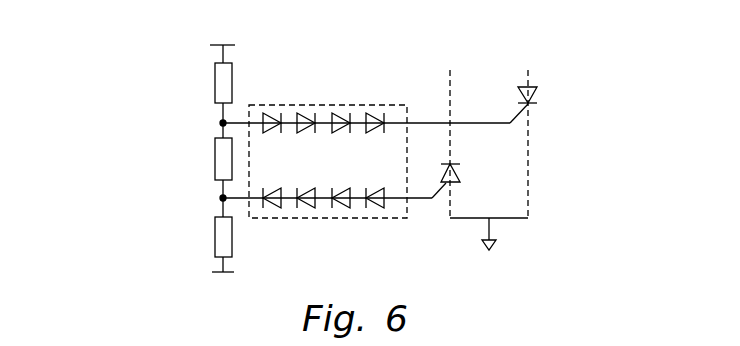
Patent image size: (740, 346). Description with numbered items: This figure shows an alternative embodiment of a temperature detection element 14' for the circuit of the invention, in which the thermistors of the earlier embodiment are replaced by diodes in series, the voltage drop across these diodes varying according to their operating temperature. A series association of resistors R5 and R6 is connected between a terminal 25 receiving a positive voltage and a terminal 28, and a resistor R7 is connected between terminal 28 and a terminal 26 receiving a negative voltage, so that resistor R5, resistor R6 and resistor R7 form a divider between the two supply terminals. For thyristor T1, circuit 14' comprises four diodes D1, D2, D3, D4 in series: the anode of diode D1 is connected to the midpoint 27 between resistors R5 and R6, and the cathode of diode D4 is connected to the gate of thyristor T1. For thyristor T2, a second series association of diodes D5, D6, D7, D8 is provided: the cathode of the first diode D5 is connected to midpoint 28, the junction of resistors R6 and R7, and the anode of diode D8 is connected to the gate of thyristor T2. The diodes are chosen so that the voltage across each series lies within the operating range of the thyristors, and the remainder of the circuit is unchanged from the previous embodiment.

The temperature detection element 14' is at (105, 142).
The terminal 25 is at (235, 45).
The terminal 26 is at (234, 272).
The midpoint 27 is at (224, 121).
The terminal 28 is at (221, 198).
The resistor R5 is at (215, 78).
The resistor R6 is at (215, 158).
The resistor R7 is at (215, 240).
The diode D1 is at (270, 112).
The diode D2 is at (304, 112).
The diode D3 is at (339, 112).
The diode D4 is at (373, 112).
The diode D5 is at (271, 209).
The diode D6 is at (305, 209).
The diode D7 is at (340, 209).
The diode D8 is at (374, 209).
The thyristor T1 is at (537, 95).
The thyristor T2 is at (460, 173).